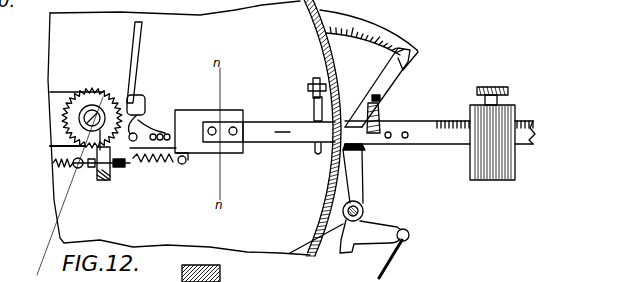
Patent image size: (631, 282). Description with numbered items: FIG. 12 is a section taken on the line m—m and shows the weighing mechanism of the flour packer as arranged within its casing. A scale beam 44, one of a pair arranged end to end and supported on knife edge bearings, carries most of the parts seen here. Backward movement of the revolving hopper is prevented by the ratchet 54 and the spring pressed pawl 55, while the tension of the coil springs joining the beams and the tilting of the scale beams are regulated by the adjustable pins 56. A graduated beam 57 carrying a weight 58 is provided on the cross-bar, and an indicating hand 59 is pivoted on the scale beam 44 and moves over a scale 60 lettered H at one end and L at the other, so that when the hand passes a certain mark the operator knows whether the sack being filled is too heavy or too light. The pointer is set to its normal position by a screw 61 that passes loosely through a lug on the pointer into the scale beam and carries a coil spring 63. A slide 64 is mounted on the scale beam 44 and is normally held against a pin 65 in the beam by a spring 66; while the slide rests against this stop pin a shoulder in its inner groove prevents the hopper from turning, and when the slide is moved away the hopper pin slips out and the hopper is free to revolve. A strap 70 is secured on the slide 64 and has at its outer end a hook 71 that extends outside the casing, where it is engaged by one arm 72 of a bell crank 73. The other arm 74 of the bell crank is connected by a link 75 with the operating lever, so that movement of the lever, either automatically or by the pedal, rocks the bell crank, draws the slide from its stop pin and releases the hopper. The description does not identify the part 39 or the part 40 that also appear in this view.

The lever bar 39 is at (140, 42).
The frame plate 40 is at (63, 189).
The scale beam 44 is at (293, 142).
The ratchet 54 is at (62, 115).
The spring pressed pawl 55 is at (134, 127).
The adjustable pin 56 is at (117, 165).
The graduated beam 57 is at (428, 144).
The weight 58 is at (500, 177).
The indicating hand 59 is at (383, 81).
The scale 60 is at (400, 32).
The screw 61 is at (380, 98).
The coil spring 63 is at (380, 115).
The slide 64 is at (186, 152).
The pin 65 is at (192, 113).
The spring 66 is at (176, 166).
The strap 70 is at (275, 132).
The hook 71 is at (365, 146).
The arm of bell crank 72 is at (357, 179).
The bell crank 73 is at (364, 211).
The arm of bell crank 74 is at (399, 227).
The link 75 is at (393, 256).